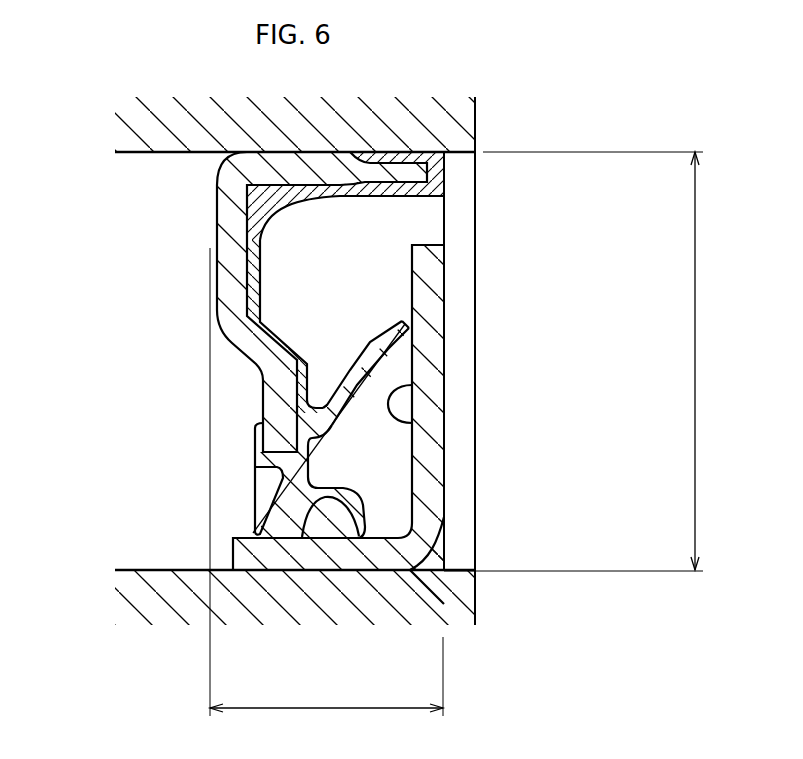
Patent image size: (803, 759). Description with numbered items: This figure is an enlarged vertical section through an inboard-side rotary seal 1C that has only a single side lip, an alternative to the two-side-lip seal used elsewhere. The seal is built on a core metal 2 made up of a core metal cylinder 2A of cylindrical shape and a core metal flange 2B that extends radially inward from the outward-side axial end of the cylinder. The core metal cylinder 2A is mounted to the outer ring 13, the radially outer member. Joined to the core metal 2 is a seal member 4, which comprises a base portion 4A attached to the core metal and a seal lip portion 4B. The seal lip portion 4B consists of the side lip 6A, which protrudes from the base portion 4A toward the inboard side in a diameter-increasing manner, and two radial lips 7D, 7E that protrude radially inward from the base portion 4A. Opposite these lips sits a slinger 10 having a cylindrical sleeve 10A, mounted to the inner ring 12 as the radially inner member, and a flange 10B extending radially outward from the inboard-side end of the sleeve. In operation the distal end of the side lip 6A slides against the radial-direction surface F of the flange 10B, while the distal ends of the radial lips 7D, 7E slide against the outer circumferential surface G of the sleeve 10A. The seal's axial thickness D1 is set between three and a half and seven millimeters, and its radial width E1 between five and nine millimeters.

The outer ring 13 is at (443, 123).
The inner ring 12 is at (147, 575).
The rotary seal 1C is at (462, 293).
The core metal 2 is at (106, 165).
The core metal cylinder 2A is at (300, 158).
The core metal flange 2B is at (223, 265).
The seal member 4 is at (377, 250).
The base portion 4A is at (290, 326).
The seal lip portion 4B is at (369, 338).
The side lip 6A is at (373, 363).
The radial lip 7D is at (338, 518).
The radial lip 7E is at (277, 517).
The slinger 10 is at (618, 425).
The sleeve 10A is at (372, 538).
The flange 10B is at (440, 438).
The radial-direction surface F is at (413, 423).
The outer circumferential surface G is at (343, 490).
The width of the seal E1 is at (573, 361).
The thickness of the seal D1 is at (326, 482).